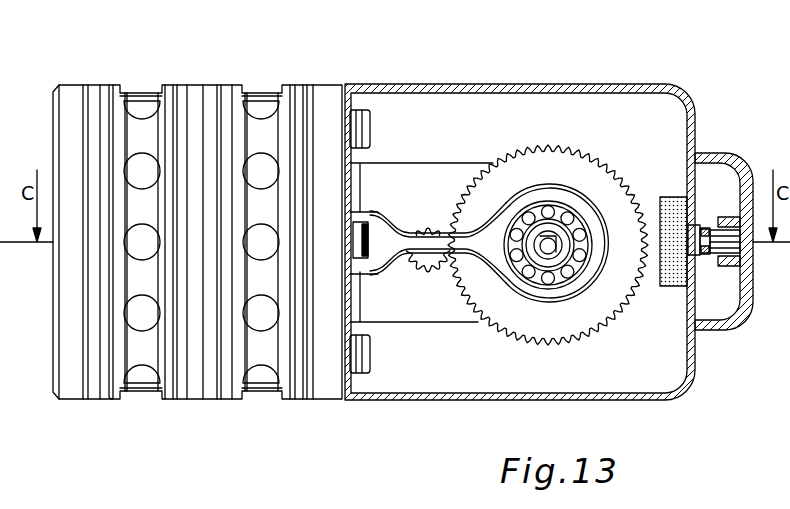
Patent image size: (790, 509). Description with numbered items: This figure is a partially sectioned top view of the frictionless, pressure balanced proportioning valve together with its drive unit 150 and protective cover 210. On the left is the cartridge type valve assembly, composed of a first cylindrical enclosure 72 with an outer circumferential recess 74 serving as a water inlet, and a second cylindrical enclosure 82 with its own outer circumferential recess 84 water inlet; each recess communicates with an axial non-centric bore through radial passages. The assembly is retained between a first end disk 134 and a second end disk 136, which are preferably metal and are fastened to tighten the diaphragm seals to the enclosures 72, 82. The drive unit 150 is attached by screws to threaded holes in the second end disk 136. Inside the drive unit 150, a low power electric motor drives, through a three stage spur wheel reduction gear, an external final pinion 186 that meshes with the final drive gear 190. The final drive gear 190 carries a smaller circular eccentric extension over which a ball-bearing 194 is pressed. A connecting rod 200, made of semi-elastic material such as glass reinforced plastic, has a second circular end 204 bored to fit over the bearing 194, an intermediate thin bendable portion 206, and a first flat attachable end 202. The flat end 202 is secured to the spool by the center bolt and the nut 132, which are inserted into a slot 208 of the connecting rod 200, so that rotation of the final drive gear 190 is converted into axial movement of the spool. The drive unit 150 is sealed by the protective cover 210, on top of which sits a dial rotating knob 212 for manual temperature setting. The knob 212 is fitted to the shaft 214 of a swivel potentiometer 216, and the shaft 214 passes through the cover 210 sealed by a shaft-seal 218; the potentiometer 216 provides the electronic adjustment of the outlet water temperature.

The first end disk 134 is at (73, 88).
The first cylindrical enclosure 72 is at (88, 88).
The outer circumferential recess water inlet 74 is at (140, 88).
The outer circumferential recess water inlet 84 is at (258, 88).
The second cylindrical enclosure 82 is at (310, 88).
The second end disk 136 is at (333, 88).
The drive unit 150 is at (510, 58).
The protective cover 210 is at (598, 84).
The final drive gear 190 is at (518, 151).
The second circular end 204 is at (572, 197).
The ball-bearing 194 is at (553, 280).
The connecting rod 200 is at (439, 263).
The intermediate thin bendable portion 206 is at (421, 248).
The external final pinion 186 is at (437, 263).
The first flat attachable end 202 is at (357, 212).
The slot 208 is at (368, 232).
The nut 132 is at (357, 262).
The dial rotating knob 212 is at (700, 154).
The shaft-seal 218 is at (693, 228).
The shaft 214 is at (735, 256).
The swivel potentiometer 216 is at (672, 288).